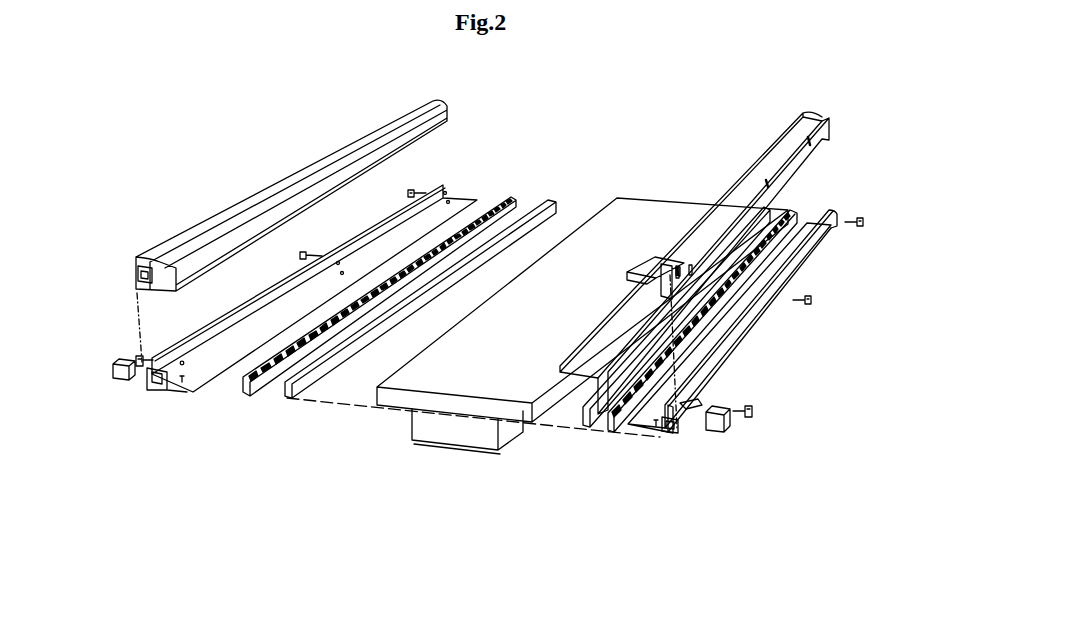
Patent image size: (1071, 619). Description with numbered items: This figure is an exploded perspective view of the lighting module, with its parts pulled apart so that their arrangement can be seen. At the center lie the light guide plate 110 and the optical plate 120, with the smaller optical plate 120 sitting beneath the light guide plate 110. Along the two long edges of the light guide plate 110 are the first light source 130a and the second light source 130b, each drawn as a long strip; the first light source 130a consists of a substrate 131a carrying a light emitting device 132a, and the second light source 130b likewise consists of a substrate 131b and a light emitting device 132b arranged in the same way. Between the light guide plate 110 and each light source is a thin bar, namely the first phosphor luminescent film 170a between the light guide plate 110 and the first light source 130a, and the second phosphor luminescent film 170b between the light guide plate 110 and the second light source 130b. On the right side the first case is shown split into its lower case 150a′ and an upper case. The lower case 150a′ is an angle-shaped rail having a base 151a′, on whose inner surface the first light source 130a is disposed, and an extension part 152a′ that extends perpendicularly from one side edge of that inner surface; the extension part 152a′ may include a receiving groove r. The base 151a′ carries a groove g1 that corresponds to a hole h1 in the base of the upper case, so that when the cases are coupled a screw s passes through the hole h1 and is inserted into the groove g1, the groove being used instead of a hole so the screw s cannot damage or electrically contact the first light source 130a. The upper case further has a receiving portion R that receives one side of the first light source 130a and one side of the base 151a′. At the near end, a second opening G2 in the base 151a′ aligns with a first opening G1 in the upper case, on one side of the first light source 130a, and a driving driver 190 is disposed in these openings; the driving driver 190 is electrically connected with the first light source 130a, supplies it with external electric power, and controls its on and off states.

The light guide plate 110 is at (402, 398).
The optical plate 120 is at (455, 452).
The first light source 130a is at (672, 353).
The second light source 130b is at (356, 331).
The substrate 131a is at (612, 432).
The substrate 131b is at (265, 444).
The light emitting device 132a is at (606, 426).
The light emitting device 132b is at (257, 397).
The lower case 150a′ is at (509, 359).
The base 151a′ is at (672, 433).
The extension part 152a′ is at (645, 433).
The first phosphor luminescent film 170a is at (580, 418).
The second phosphor luminescent film 170b is at (288, 400).
The driving driver 190 is at (727, 432).
The first opening G1 is at (137, 288).
The second opening G2 is at (171, 387).
The receiving portion R is at (640, 282).
The receiving groove r is at (657, 428).
The groove g1 is at (700, 404).
The hole h1 is at (675, 265).
The screw s is at (755, 411).